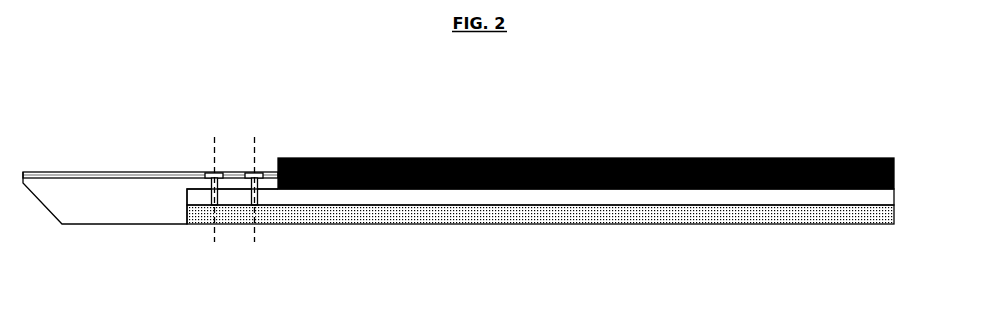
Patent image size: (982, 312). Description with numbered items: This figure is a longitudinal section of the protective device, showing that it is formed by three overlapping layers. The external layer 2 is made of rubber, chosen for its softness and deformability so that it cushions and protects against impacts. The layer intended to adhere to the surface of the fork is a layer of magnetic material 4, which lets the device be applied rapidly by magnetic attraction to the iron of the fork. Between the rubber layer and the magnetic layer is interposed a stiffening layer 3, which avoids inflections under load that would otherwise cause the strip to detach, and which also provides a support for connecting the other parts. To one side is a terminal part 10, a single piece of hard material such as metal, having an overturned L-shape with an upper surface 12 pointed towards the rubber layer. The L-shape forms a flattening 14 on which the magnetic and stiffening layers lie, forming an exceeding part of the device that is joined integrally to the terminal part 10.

The external layer 2 is at (875, 158).
The stiffening layer 3 is at (878, 197).
The layer of magnetic material 4 is at (772, 215).
The terminal part 10 is at (138, 186).
The upper surface 12 is at (69, 172).
The flattening 14 is at (227, 198).